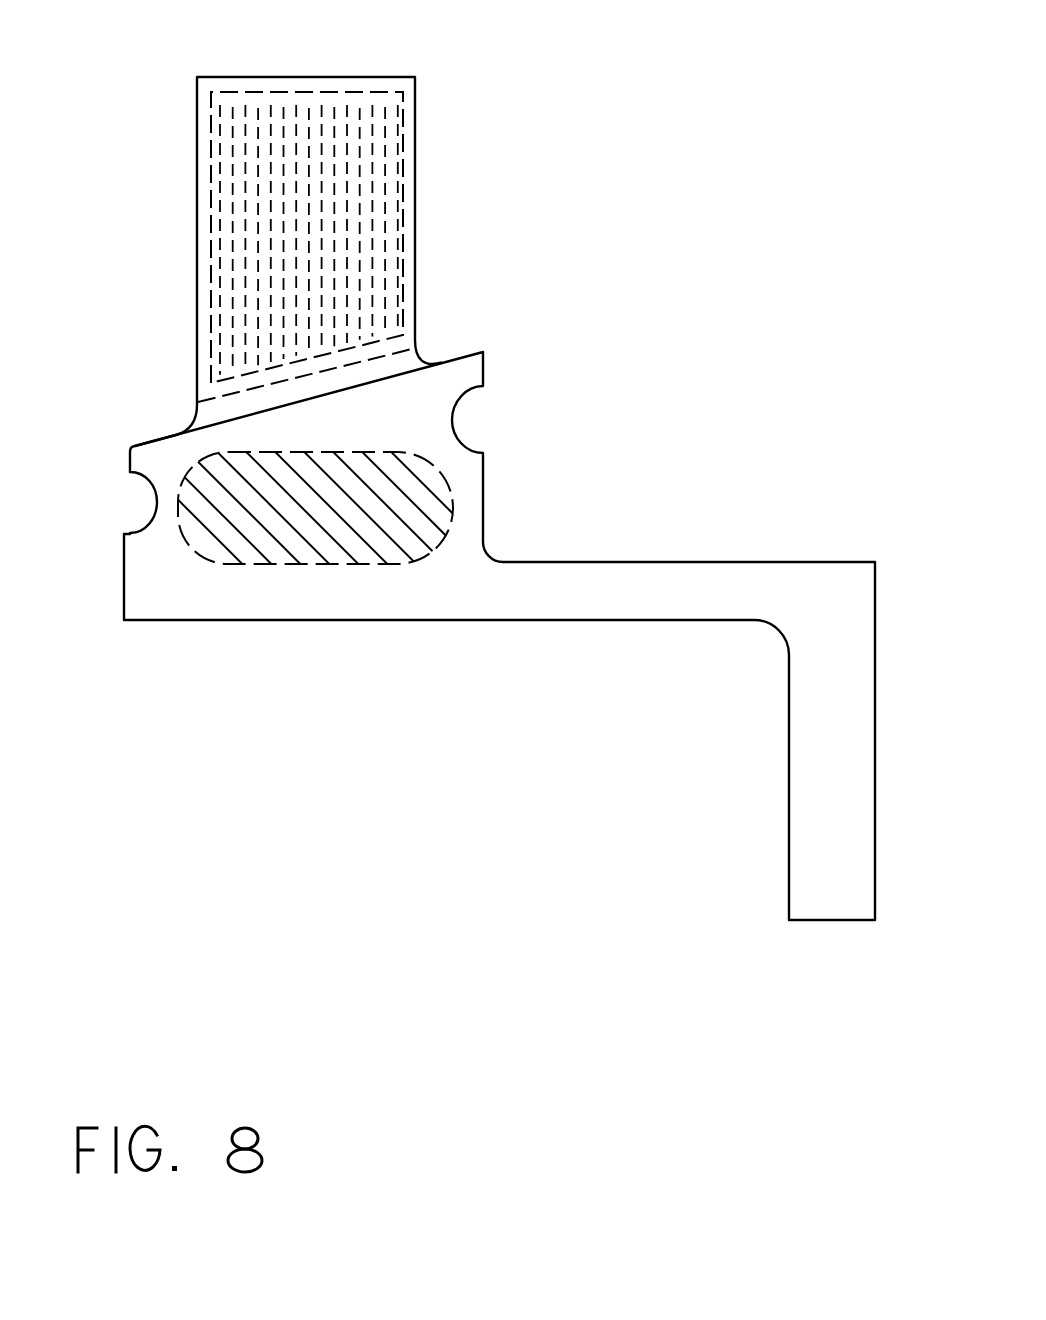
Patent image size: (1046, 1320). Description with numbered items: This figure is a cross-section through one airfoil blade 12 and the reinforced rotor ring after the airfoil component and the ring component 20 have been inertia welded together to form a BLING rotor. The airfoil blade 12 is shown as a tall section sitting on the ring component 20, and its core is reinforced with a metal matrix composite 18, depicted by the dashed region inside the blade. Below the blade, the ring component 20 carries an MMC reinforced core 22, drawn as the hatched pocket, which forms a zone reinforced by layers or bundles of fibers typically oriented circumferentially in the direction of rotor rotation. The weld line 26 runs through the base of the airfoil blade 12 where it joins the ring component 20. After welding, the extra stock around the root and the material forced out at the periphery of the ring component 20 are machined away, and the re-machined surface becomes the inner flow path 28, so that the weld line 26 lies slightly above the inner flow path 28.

The airfoil blade 12 is at (308, 77).
The metal matrix composite 18 is at (403, 198).
The ring component 20 is at (645, 562).
The MMC reinforced core 22 is at (263, 563).
The weld line 26 is at (338, 368).
The inner flow path 28 is at (147, 439).